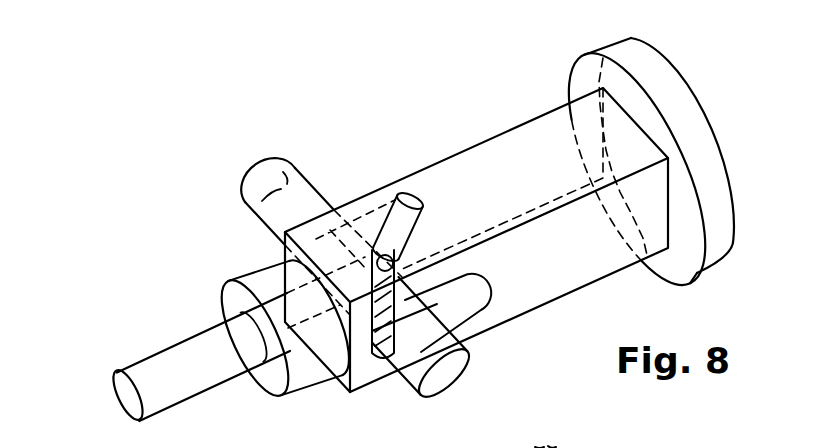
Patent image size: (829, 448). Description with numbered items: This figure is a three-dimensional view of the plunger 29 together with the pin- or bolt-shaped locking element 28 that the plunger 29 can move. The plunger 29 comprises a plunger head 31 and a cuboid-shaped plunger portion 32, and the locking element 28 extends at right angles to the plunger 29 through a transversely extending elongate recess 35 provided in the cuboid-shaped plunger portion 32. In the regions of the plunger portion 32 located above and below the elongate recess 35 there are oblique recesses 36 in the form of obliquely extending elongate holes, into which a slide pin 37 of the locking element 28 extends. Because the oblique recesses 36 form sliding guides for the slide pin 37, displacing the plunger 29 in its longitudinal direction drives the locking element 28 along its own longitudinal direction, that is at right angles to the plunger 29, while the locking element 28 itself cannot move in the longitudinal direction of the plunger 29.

The locking element 28 is at (295, 194).
The plunger 29 is at (537, 105).
The plunger head 31 is at (693, 134).
The cuboid-shaped plunger portion 32 is at (503, 162).
The elongate recess 35 is at (478, 306).
The oblique recesses 36 is at (379, 232).
The slide pin 37 is at (390, 253).